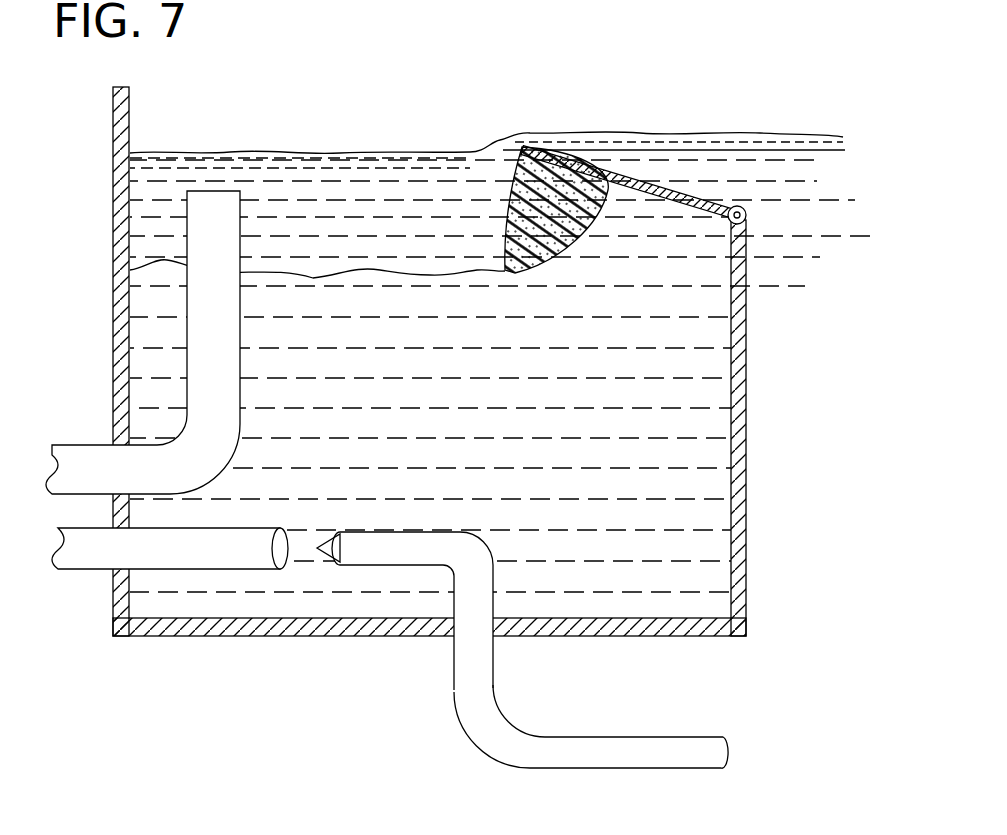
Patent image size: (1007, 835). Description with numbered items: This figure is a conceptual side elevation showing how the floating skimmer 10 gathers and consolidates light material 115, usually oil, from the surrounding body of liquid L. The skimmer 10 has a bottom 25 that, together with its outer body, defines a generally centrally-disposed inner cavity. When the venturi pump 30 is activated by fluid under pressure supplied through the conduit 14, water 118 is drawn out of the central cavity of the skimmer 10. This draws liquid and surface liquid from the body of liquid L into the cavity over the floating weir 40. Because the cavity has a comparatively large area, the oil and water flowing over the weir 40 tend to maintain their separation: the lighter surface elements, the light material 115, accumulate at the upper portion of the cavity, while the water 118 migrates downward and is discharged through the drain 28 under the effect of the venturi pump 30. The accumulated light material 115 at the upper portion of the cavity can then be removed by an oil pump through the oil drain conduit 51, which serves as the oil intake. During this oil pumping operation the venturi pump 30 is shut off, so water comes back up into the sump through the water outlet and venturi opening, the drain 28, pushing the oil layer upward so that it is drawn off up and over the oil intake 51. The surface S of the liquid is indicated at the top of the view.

The floating skimmer 10 is at (765, 390).
The conduit 14 is at (637, 768).
The bottom 25 is at (550, 636).
The drain 28 is at (260, 567).
The venturi pump 30 is at (363, 557).
The floating weir 40 is at (640, 178).
The oil drain conduit 51 is at (215, 191).
The light material 115 is at (300, 180).
The water 118 is at (530, 422).
The body of liquid L is at (383, 295).
The surface S is at (625, 137).